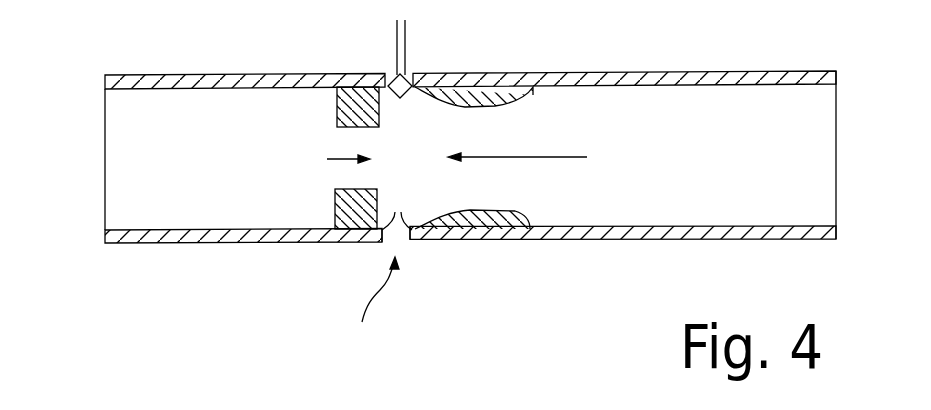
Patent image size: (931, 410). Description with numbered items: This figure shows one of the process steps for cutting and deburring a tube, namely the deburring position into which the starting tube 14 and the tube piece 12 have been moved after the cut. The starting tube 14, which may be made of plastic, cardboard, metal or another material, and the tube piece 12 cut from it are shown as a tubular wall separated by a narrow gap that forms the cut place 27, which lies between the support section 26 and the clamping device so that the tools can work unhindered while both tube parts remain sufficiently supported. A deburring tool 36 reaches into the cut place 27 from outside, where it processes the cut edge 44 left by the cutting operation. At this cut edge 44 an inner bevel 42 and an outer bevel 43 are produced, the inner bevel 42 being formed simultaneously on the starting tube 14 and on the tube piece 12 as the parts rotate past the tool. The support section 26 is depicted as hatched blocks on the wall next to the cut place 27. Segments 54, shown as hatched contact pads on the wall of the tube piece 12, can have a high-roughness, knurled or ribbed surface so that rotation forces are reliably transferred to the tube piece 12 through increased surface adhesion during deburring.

The tube piece 12 is at (748, 241).
The starting tube 14 is at (127, 243).
The support section 26 is at (353, 212).
The cut place 27 is at (369, 305).
The deburring tool 36 is at (404, 50).
The inner bevel 42 is at (401, 212).
The outer bevel 43 is at (404, 243).
The cut edge 44 is at (386, 243).
The segments 54 is at (503, 243).